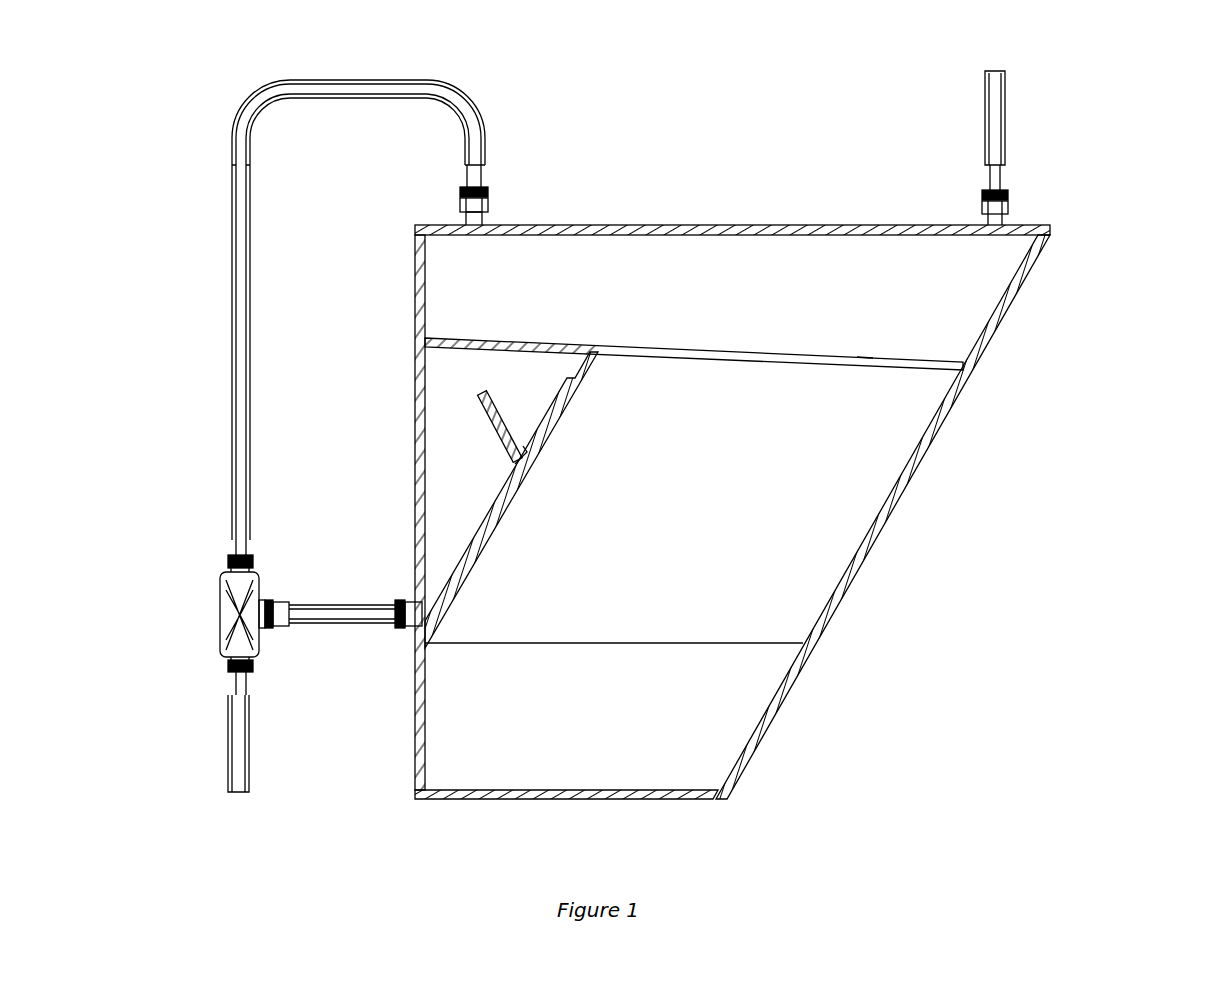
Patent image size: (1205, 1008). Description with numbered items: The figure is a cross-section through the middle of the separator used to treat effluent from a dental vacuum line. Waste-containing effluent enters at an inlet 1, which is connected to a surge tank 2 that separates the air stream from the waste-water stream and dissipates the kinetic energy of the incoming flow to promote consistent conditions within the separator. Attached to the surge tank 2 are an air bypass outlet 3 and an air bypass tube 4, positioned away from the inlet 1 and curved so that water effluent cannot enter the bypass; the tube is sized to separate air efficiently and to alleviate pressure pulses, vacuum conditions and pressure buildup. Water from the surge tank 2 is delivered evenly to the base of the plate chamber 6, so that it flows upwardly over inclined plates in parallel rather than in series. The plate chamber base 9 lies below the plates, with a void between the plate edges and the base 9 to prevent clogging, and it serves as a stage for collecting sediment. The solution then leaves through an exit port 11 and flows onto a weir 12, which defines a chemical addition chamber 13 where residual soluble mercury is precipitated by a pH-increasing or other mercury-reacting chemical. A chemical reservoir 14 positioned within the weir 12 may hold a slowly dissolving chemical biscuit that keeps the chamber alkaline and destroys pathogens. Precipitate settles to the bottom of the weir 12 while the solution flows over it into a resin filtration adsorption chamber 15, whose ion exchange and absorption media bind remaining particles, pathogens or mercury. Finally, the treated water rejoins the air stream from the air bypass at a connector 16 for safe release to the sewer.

The inlet 1 is at (1008, 215).
The surge tank 2 is at (596, 260).
The air bypass outlet 3 is at (490, 210).
The air bypass tube 4 is at (475, 93).
The plate chamber 6 is at (698, 735).
The plate chamber base 9 is at (617, 793).
The exit port 11 is at (578, 368).
The weir 12 is at (493, 427).
The chemical addition chamber 13 is at (523, 403).
The chemical reservoir 14 is at (512, 456).
The resin filtration adsorption chamber 15 is at (440, 543).
The connector 16 is at (225, 603).